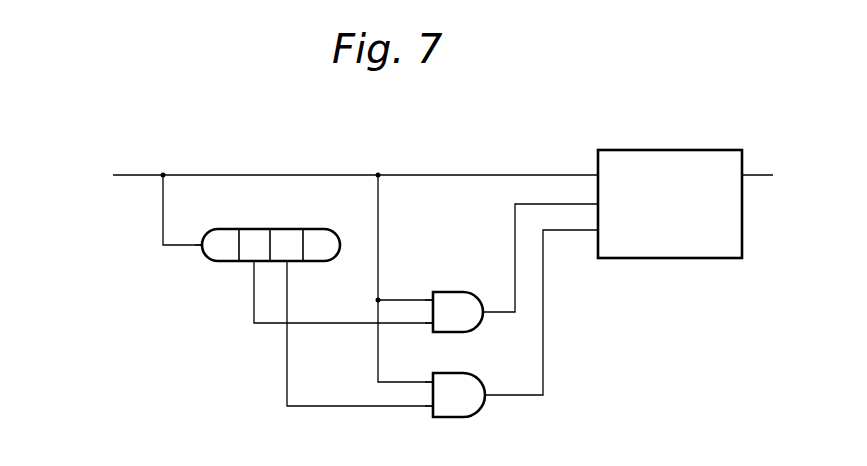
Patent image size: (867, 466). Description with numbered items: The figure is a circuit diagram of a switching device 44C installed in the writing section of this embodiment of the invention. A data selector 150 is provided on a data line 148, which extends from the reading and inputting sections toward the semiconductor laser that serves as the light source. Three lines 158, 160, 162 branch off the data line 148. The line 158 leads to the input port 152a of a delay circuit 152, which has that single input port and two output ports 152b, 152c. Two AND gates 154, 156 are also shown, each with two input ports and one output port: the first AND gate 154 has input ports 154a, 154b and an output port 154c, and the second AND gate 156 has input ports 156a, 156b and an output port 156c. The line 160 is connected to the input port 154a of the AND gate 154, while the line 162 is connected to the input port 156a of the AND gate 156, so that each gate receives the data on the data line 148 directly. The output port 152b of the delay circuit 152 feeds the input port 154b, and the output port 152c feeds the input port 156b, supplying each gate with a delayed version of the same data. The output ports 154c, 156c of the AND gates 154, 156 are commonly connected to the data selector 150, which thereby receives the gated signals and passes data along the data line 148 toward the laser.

The switching device 44C is at (711, 96).
The data line 148 is at (136, 175).
The data selector 150 is at (640, 148).
The delay circuit 152 is at (233, 220).
The input port 152a is at (202, 247).
The output port 152b is at (253, 263).
The output port 152c is at (289, 262).
The AND gate 154 is at (482, 288).
The input port 154a is at (447, 272).
The input port 154b is at (430, 324).
The output port 154c is at (487, 314).
The AND gate 156 is at (478, 419).
The input port 156a is at (430, 385).
The input port 156b is at (430, 410).
The output port 156c is at (487, 395).
The line 158 is at (163, 210).
The line 160 is at (393, 295).
The line 162 is at (378, 343).